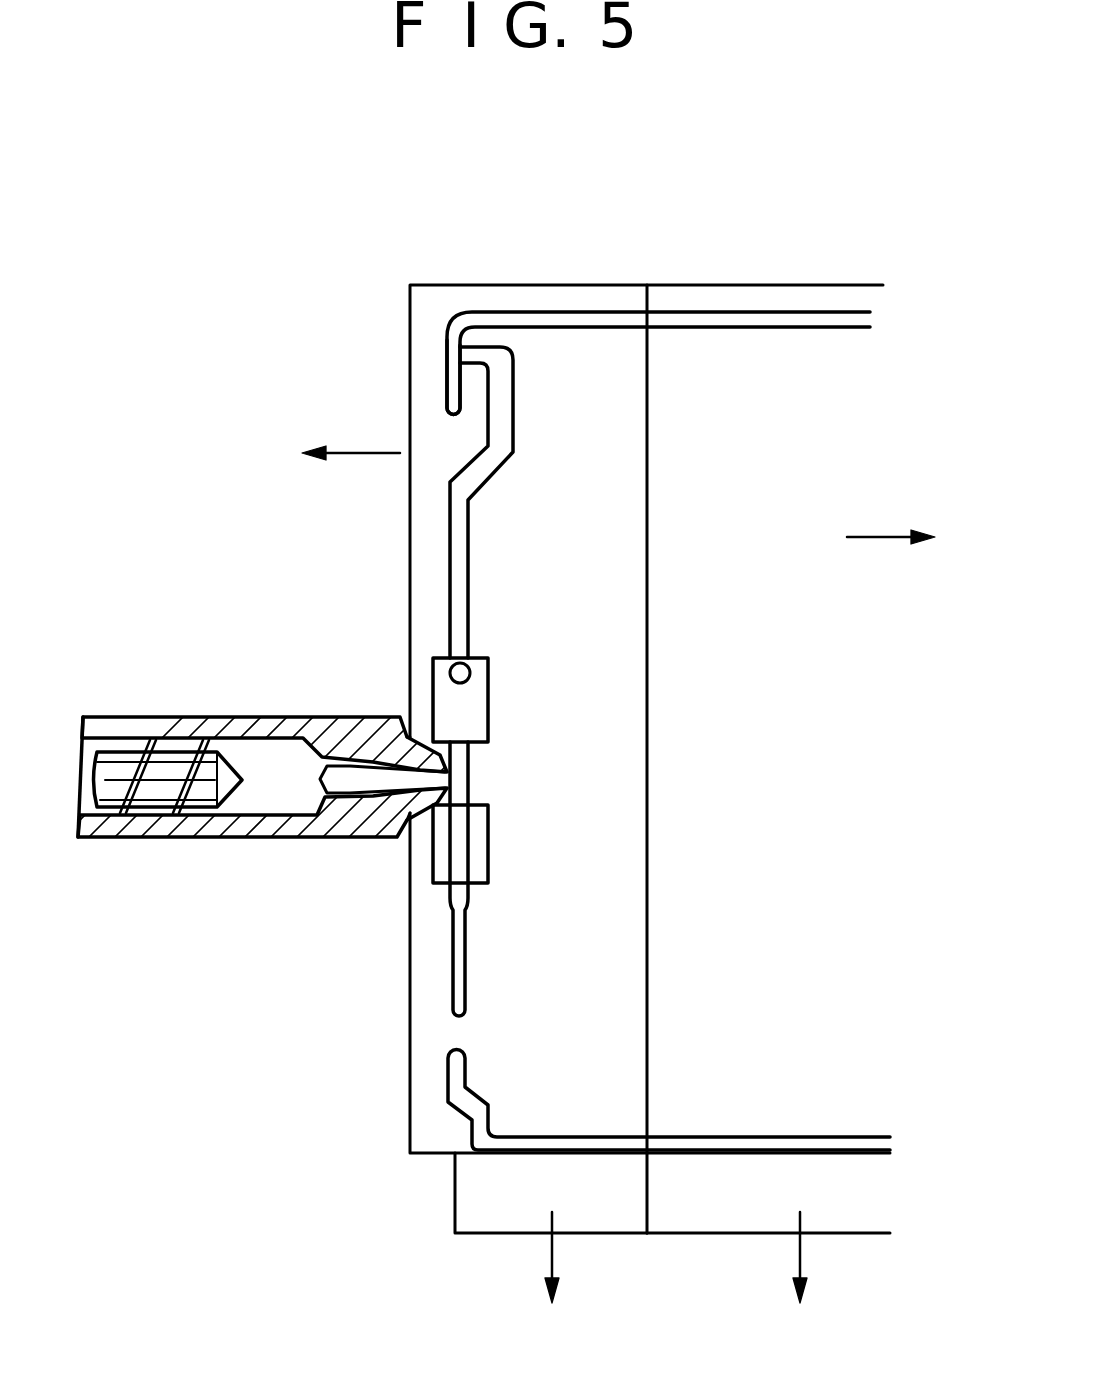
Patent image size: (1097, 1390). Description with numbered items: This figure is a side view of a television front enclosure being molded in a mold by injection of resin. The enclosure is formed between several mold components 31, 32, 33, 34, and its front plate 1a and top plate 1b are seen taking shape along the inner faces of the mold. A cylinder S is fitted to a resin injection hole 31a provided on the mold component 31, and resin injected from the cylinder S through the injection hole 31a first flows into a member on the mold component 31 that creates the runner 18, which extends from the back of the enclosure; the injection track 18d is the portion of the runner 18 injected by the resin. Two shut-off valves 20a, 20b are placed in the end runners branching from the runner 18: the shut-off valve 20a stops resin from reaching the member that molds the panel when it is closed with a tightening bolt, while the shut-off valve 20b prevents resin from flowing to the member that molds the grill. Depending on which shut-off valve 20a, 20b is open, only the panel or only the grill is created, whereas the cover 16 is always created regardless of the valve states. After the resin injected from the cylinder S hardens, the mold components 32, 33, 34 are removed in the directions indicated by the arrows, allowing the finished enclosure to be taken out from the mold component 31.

The mold component 31 is at (485, 285).
The mold component 32 is at (787, 285).
The mold component 33 is at (613, 1220).
The mold component 34 is at (722, 1222).
The top plate 1b is at (590, 312).
The front plate 1a is at (450, 383).
The runner 18 is at (470, 518).
The shut-off valve 20b is at (490, 680).
The injection track 18d is at (450, 773).
The shut-off valve 20a is at (488, 858).
The cover 16 is at (465, 985).
The cylinder S is at (230, 717).
The resin injection hole 31a is at (409, 738).